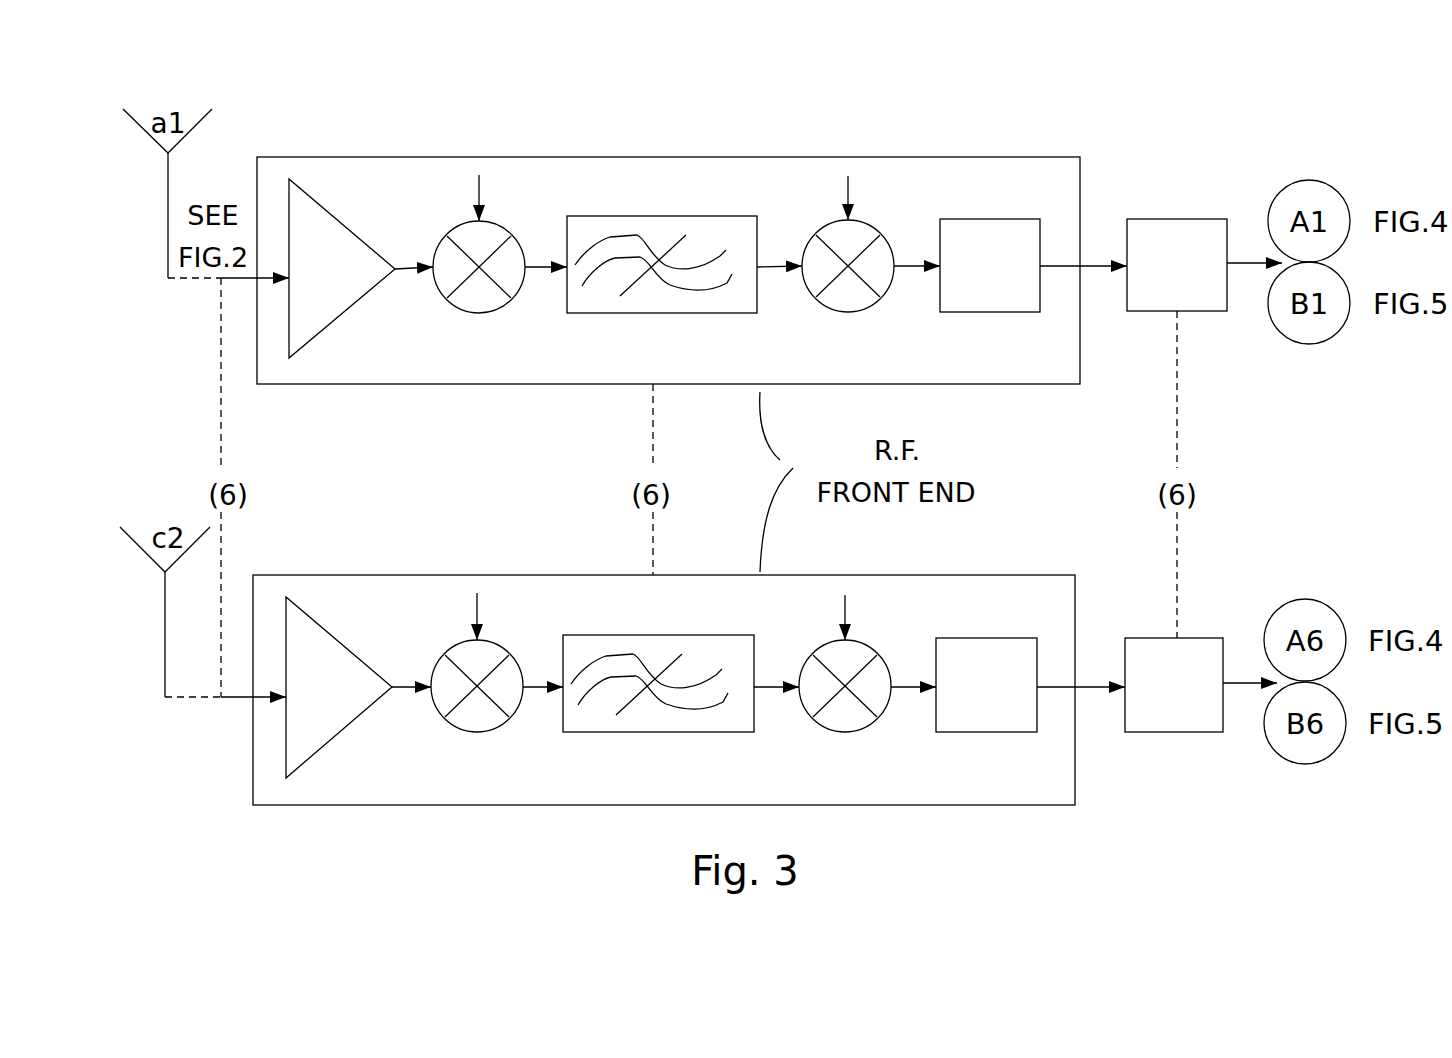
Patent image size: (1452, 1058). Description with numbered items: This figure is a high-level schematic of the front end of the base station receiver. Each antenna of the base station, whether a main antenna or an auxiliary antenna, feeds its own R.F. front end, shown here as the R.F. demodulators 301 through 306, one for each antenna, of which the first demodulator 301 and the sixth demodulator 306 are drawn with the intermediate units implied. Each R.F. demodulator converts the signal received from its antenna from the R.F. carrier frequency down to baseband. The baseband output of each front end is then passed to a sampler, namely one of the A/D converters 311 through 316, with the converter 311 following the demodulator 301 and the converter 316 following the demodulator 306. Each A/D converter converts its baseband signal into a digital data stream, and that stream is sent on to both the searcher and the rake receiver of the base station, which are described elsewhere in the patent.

The R.F. demodulator 301 is at (938, 157).
The R.F. demodulator 306 is at (1013, 575).
The A/D converter 311 is at (1165, 219).
The A/D converter 316 is at (1187, 732).